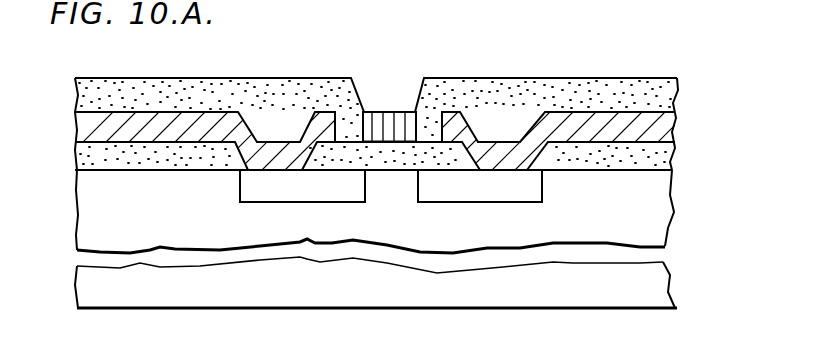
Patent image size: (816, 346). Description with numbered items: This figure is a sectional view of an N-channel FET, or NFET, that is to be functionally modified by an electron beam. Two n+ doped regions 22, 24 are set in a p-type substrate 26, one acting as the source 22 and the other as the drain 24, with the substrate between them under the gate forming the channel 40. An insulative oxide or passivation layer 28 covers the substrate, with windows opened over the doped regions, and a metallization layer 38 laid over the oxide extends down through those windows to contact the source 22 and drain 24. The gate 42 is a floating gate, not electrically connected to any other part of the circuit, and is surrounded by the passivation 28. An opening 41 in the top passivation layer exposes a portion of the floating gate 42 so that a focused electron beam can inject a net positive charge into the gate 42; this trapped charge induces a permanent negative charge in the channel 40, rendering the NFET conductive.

The n+ doped region 22 is at (252, 202).
The n+ doped region 24 is at (543, 193).
The p-type substrate 26 is at (655, 232).
The insulative oxide layer 28 is at (665, 158).
The metallization layer 38 is at (88, 125).
The channel 40 is at (388, 178).
The opening 41 is at (417, 114).
The floating gate 42 is at (408, 123).